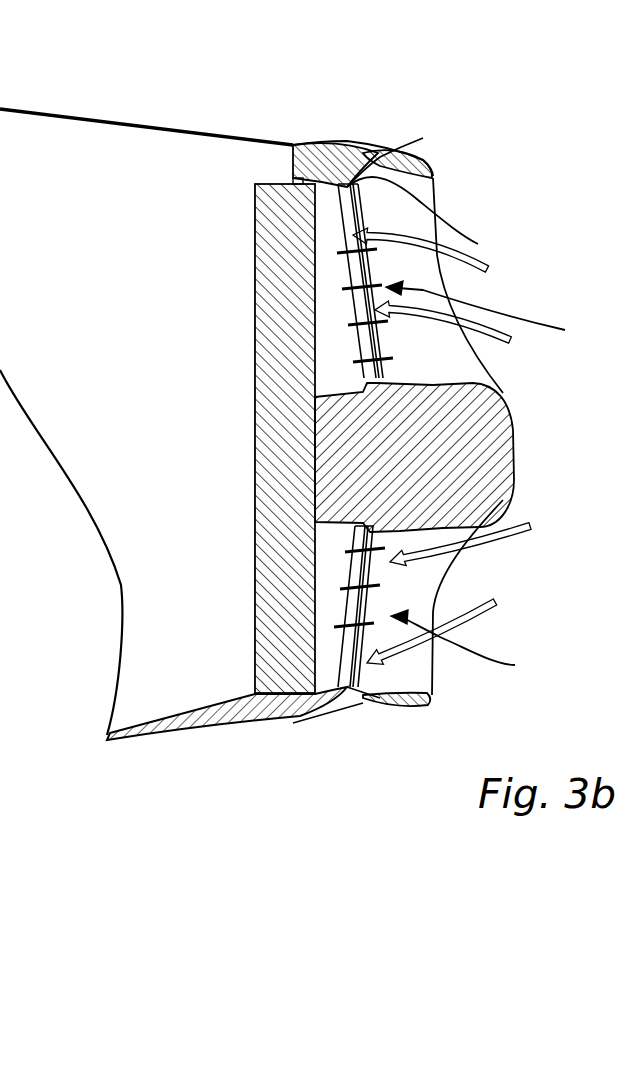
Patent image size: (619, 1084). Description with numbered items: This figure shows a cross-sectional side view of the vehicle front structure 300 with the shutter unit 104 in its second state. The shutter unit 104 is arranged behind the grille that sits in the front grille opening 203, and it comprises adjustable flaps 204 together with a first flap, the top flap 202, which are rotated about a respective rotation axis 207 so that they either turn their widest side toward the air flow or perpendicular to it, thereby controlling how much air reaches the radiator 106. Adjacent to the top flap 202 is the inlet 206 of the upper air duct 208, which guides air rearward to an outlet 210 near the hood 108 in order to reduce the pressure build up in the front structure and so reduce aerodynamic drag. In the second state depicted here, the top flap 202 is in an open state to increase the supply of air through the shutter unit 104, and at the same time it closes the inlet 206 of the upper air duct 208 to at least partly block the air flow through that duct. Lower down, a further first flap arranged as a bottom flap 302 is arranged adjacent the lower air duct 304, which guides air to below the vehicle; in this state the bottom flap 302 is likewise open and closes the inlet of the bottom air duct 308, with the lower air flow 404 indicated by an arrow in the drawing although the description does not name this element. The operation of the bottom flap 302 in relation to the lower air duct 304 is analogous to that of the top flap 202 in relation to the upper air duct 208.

The hood 108 is at (160, 126).
The outlet 210 is at (300, 146).
The air duct 208 is at (350, 158).
The rotation axis 207 is at (378, 154).
The inlet 206 is at (423, 138).
The vehicle front structure 300 is at (503, 170).
The top flap 202 is at (435, 224).
The front grille opening 203 is at (436, 265).
The shutter unit 104 is at (496, 313).
The adjustable flaps 204 is at (377, 327).
The radiator 106 is at (268, 390).
The lower air duct 304 is at (373, 587).
The lower leakage flow arrow 404 is at (463, 641).
The bottom flap 302 is at (363, 695).
The bottom air duct 308 is at (355, 700).